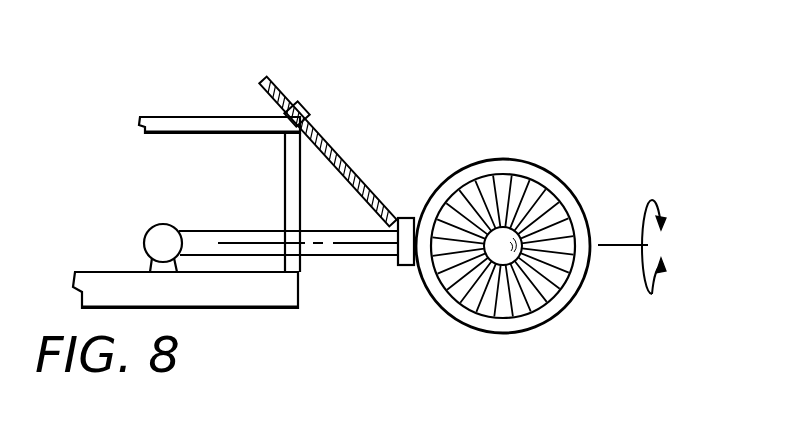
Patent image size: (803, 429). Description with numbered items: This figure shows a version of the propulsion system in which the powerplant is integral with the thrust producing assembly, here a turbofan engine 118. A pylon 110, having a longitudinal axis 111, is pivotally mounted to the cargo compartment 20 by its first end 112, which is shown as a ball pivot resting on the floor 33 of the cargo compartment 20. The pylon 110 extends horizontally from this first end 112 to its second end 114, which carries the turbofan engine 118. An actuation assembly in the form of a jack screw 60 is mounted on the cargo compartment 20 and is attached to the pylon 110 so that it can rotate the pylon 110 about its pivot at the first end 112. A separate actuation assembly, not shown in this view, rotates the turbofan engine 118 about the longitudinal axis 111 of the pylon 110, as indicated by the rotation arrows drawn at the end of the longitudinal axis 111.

The cargo compartment 20 is at (253, 308).
The floor 33 is at (128, 271).
The jack screw 60 is at (358, 164).
The pylon 110 is at (335, 257).
The longitudinal axis 111 is at (355, 258).
The first end 112 is at (170, 224).
The second end 114 is at (405, 218).
The turbofan engine 118 is at (582, 210).